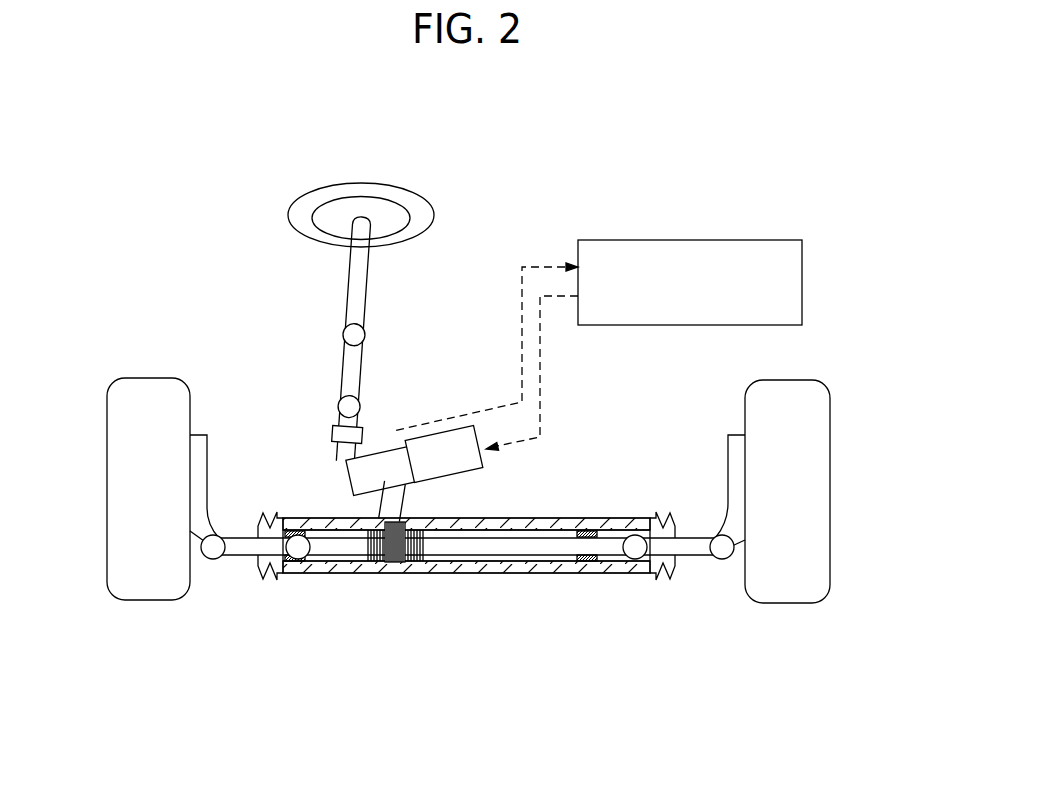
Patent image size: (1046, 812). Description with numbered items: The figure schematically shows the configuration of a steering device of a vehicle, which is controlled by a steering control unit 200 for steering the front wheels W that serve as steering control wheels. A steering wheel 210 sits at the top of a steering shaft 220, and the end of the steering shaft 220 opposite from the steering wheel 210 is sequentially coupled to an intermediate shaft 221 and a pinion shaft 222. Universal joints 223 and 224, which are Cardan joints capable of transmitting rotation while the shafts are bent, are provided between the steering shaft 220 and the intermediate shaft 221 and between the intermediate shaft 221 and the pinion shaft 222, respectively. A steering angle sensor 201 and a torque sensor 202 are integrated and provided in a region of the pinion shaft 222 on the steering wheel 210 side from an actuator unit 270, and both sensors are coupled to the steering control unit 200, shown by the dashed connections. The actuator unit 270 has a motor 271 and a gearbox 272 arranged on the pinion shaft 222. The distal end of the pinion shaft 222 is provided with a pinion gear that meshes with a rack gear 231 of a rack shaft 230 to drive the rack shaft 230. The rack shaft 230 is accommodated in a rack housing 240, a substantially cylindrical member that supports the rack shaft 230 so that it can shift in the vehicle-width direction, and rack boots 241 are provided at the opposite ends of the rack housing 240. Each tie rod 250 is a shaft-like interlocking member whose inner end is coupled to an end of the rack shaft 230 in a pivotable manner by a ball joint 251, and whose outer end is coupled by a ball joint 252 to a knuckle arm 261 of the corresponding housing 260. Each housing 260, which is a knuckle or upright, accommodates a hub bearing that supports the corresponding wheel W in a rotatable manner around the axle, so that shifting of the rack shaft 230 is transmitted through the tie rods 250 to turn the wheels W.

The steering control unit 200 is at (597, 318).
The steering wheel 210 is at (347, 192).
The steering shaft 220 is at (304, 272).
The intermediate shaft 221 is at (413, 364).
The pinion shaft 222 is at (441, 499).
The universal joint 223 is at (318, 315).
The universal joint 224 is at (319, 369).
The steering angle sensor 201 is at (301, 407).
The torque sensor 202 is at (301, 407).
The actuator unit 270 is at (405, 456).
The motor 271 is at (494, 456).
The gearbox 272 is at (340, 473).
The rack shaft 230 is at (466, 597).
The rack gear 231 is at (414, 599).
The rack housing 240 is at (645, 605).
The rack boot 241 is at (688, 594).
The tie rod 250 is at (467, 607).
The ball joint 251 is at (316, 605).
The ball joint 252 is at (242, 594).
The housing 260 is at (420, 555).
The knuckle arm 261 is at (447, 603).
The wheel W is at (447, 510).